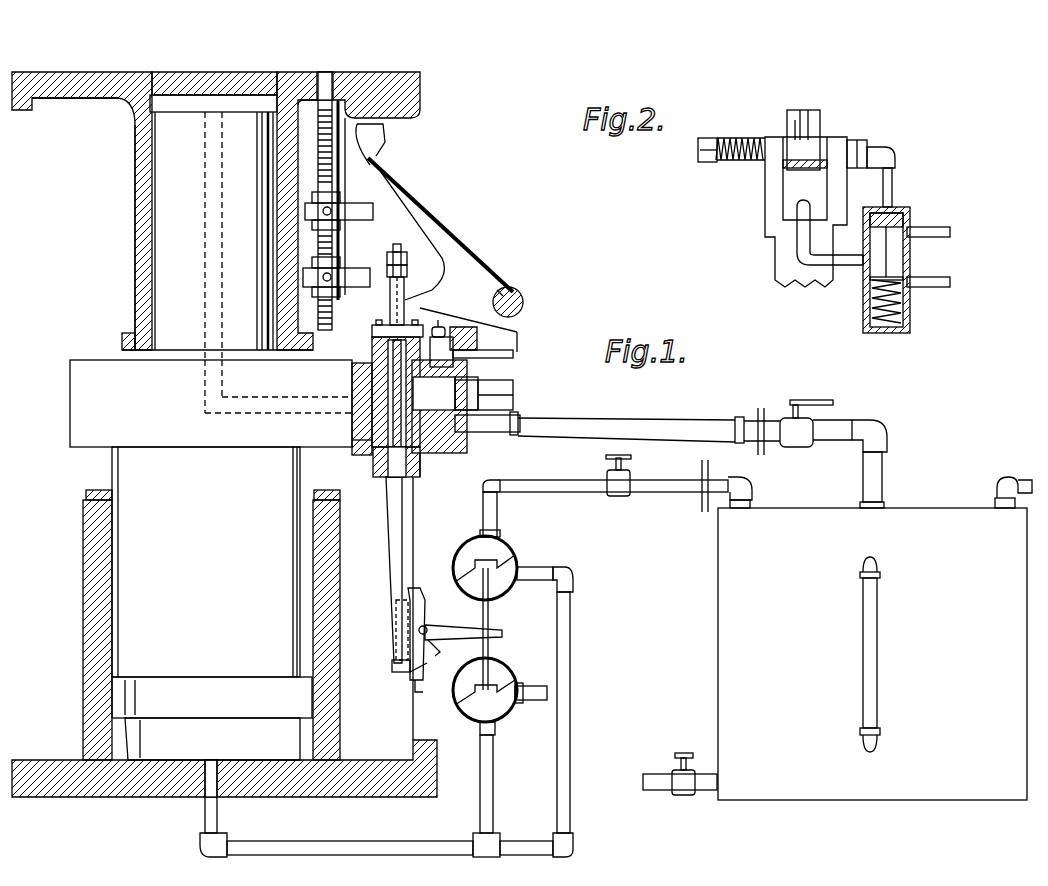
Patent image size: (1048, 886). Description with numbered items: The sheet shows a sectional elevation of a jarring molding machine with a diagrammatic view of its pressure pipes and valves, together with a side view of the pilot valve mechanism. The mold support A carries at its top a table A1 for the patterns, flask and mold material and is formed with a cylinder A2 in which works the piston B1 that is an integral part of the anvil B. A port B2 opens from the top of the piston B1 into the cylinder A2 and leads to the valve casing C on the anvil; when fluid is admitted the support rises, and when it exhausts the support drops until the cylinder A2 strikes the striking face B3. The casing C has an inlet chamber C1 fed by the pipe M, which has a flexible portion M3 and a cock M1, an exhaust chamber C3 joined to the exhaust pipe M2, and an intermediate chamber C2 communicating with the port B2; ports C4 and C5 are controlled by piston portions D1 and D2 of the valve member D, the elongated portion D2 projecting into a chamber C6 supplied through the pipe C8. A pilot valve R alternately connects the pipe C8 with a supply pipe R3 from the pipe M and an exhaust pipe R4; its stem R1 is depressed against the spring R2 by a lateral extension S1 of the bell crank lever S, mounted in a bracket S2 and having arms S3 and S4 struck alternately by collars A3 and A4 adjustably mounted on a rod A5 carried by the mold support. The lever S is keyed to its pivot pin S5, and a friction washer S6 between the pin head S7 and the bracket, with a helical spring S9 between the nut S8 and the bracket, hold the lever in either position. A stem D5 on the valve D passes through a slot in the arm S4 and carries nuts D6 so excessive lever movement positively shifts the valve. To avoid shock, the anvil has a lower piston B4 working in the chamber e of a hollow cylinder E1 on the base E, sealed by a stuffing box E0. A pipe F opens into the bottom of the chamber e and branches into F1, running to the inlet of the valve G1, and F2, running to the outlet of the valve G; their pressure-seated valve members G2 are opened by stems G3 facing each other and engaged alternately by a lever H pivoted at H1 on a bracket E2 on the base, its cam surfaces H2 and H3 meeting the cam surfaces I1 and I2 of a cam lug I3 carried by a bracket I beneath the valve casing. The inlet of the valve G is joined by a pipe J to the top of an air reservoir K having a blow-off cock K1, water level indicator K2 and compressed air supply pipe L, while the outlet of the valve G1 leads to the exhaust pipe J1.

In FIG. 1, the mold support A is at (216, 211).
In FIG. 1, the table A1 is at (68, 97).
In FIG. 1, the cylinder A2 is at (135, 258).
In FIG. 1, the collar A3 is at (372, 203).
In FIG. 1, the collar A4 is at (342, 268).
In FIG. 1, the rod A5 is at (384, 132).
In FIG. 1, the anvil B is at (72, 405).
In FIG. 1, the piston B1 is at (213, 227).
In FIG. 1, the port B2 is at (210, 318).
In FIG. 1, the striking face B3 is at (135, 352).
In FIG. 1, the piston B4 is at (206, 562).
In FIG. 1, the valve casing C is at (352, 435).
In FIG. 1, the inlet chamber C1 is at (467, 450).
In FIG. 1, the intermediate chamber C2 is at (355, 400).
In FIG. 1, the exhaust chamber C3 is at (478, 390).
In FIG. 1, the valve controlled port C4 is at (360, 452).
In FIG. 1, the valve controlled port C5 is at (372, 340).
In FIG. 1, the chamber C6 is at (445, 330).
In FIG. 1, the pipe C8 is at (513, 353).
In FIG. 2, the pipe C8 is at (798, 233).
In FIG. 1, the valve member D is at (402, 478).
In FIG. 1, the piston portion D1 is at (420, 468).
In FIG. 1, the piston portion D2 is at (475, 322).
In FIG. 1, the stem D5 is at (407, 262).
In FIG. 1, the nuts D6 is at (408, 270).
In FIG. 1, the base E is at (60, 740).
In FIG. 1, the stuffing box E0 is at (100, 490).
In FIG. 1, the hollow cylinder E1 is at (300, 697).
In FIG. 1, the bracket E2 is at (413, 740).
In FIG. 1, the chamber e is at (130, 690).
In FIG. 1, the pipe F is at (378, 850).
In FIG. 1, the branch F1 is at (493, 800).
In FIG. 1, the branch F2 is at (570, 795).
In FIG. 1, the valve G is at (495, 548).
In FIG. 1, the valve G1 is at (512, 678).
In FIG. 1, the valve member G2 is at (520, 556).
In FIG. 1, the valve stem G3 is at (492, 605).
In FIG. 1, the lever H is at (462, 617).
In FIG. 1, the pivot pin H1 is at (438, 645).
In FIG. 1, the cam surface H2 is at (408, 590).
In FIG. 1, the cam surface H3 is at (418, 692).
In FIG. 1, the tappet rod I is at (395, 555).
In FIG. 1, the cam surface I1 is at (400, 628).
In FIG. 1, the cam surface I2 is at (398, 665).
In FIG. 1, the cam lug I3 is at (427, 666).
In FIG. 1, the pipe J is at (560, 480).
In FIG. 1, the exhaust pipe J1 is at (527, 700).
In FIG. 1, the air reservoir K is at (872, 654).
In FIG. 1, the blow-off cock K1 is at (683, 792).
In FIG. 1, the water level indicator K2 is at (880, 642).
In FIG. 1, the compressed air supply pipe L is at (1000, 490).
In FIG. 1, the pipe M is at (517, 420).
In FIG. 1, the pipe valve M1 is at (800, 400).
In FIG. 1, the exhaust pipe M2 is at (513, 392).
In FIG. 1, the flexible portion M3 is at (645, 420).
In FIG. 2, the pilot valve R is at (907, 250).
In FIG. 2, the stem R1 is at (892, 185).
In FIG. 2, the spring R2 is at (865, 322).
In FIG. 2, the supply pipe R3 is at (937, 285).
In FIG. 2, the exhaust pipe R4 is at (912, 224).
In FIG. 1, the bell crank lever S is at (441, 232).
In FIG. 2, the bell crank lever S is at (787, 120).
In FIG. 2, the lateral extension S1 is at (890, 165).
In FIG. 1, the bracket S2 is at (524, 302).
In FIG. 2, the bracket S2 is at (772, 202).
In FIG. 1, the arm S3 is at (420, 200).
In FIG. 1, the arm S4 is at (392, 275).
In FIG. 1, the pivot pin S5 is at (512, 288).
In FIG. 2, the pivot pin S5 is at (700, 150).
In FIG. 2, the friction washer S6 is at (847, 138).
In FIG. 2, the head S7 is at (860, 145).
In FIG. 2, the nut S8 is at (706, 140).
In FIG. 2, the helical spring S9 is at (732, 165).